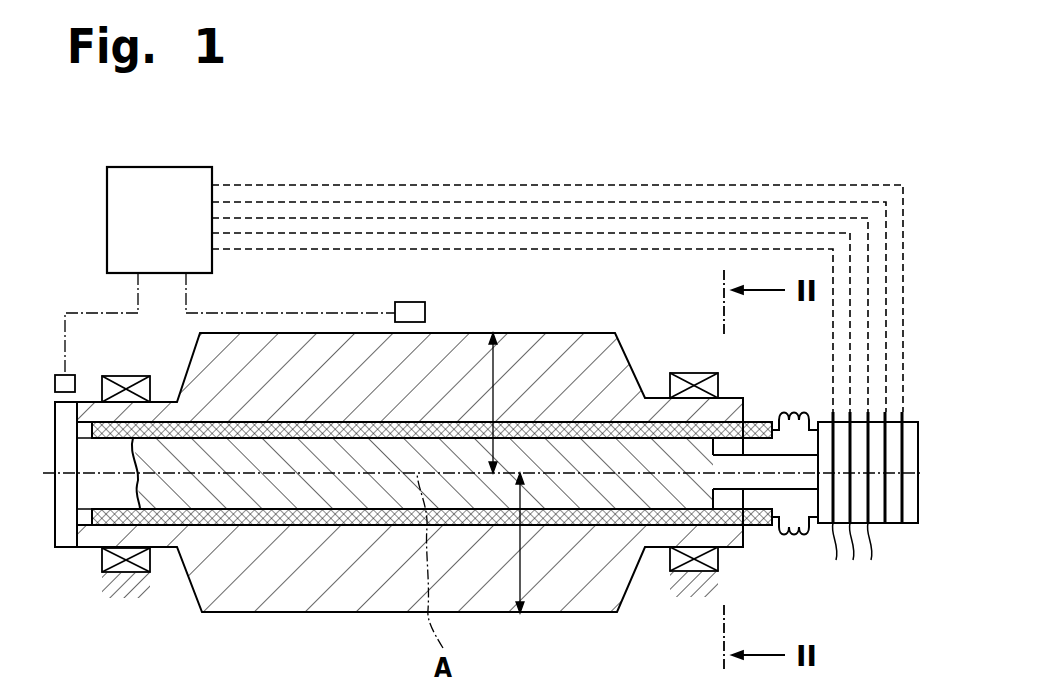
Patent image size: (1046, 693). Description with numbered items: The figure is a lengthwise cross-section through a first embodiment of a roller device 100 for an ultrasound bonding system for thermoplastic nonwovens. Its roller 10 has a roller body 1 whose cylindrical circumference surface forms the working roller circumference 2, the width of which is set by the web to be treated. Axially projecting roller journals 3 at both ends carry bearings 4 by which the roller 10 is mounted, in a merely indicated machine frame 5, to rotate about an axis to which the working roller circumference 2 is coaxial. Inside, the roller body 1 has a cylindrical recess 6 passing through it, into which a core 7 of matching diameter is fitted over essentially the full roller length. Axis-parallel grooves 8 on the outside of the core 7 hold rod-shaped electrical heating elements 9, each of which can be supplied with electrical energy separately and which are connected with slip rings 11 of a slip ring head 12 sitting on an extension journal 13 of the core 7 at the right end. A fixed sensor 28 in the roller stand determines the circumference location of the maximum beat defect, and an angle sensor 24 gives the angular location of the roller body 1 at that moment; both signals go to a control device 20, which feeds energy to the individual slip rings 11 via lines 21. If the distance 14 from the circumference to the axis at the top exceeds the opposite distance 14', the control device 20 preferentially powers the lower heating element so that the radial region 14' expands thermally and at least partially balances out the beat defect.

The roller device 100 is at (629, 162).
The roller body 1 is at (612, 378).
The working roller circumference 2 is at (575, 333).
The roller journals 3 is at (93, 537).
The bearings 4 is at (126, 384).
The machine frame 5 is at (127, 583).
The cylindrical recess 6 is at (240, 527).
The core 7 is at (317, 527).
The grooves 8 is at (293, 440).
The electrical heating elements 9 is at (400, 427).
The roller 10 is at (437, 474).
The slip rings 11 is at (852, 558).
The slip ring head 12 is at (912, 530).
The extension journal 13 is at (787, 480).
The distance 14 is at (513, 369).
The distance 14' is at (542, 578).
The control device 20 is at (157, 180).
The lines 21 is at (557, 257).
The angle sensor 24 is at (70, 376).
The sensor 28 is at (410, 311).